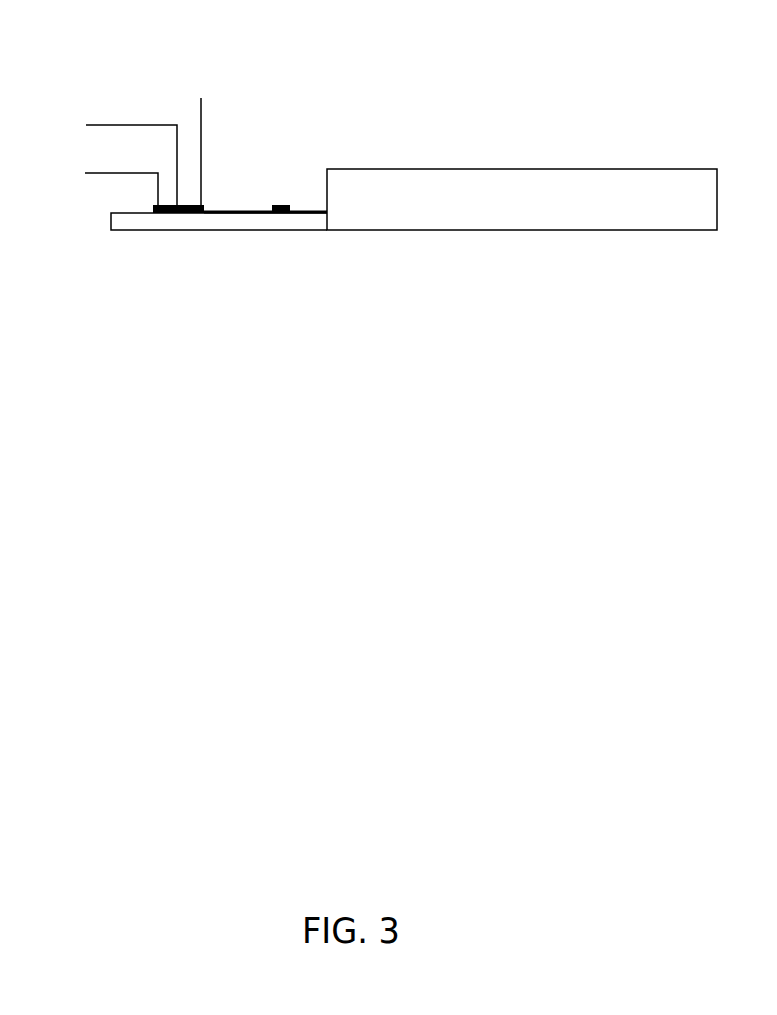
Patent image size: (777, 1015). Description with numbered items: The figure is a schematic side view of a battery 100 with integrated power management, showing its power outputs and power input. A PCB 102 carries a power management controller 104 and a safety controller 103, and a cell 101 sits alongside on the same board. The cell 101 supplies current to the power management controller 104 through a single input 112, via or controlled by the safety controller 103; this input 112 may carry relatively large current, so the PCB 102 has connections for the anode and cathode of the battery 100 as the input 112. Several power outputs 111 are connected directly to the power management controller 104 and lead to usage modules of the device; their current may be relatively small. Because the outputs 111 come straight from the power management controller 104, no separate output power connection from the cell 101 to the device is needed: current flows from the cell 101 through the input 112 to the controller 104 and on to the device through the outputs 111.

The battery 100 is at (678, 112).
The cell 101 is at (487, 205).
The PCB 102 is at (113, 232).
The safety controller 103 is at (290, 213).
The power management controller 104 is at (204, 213).
The power outputs 111 is at (140, 125).
The power input 112 is at (230, 212).